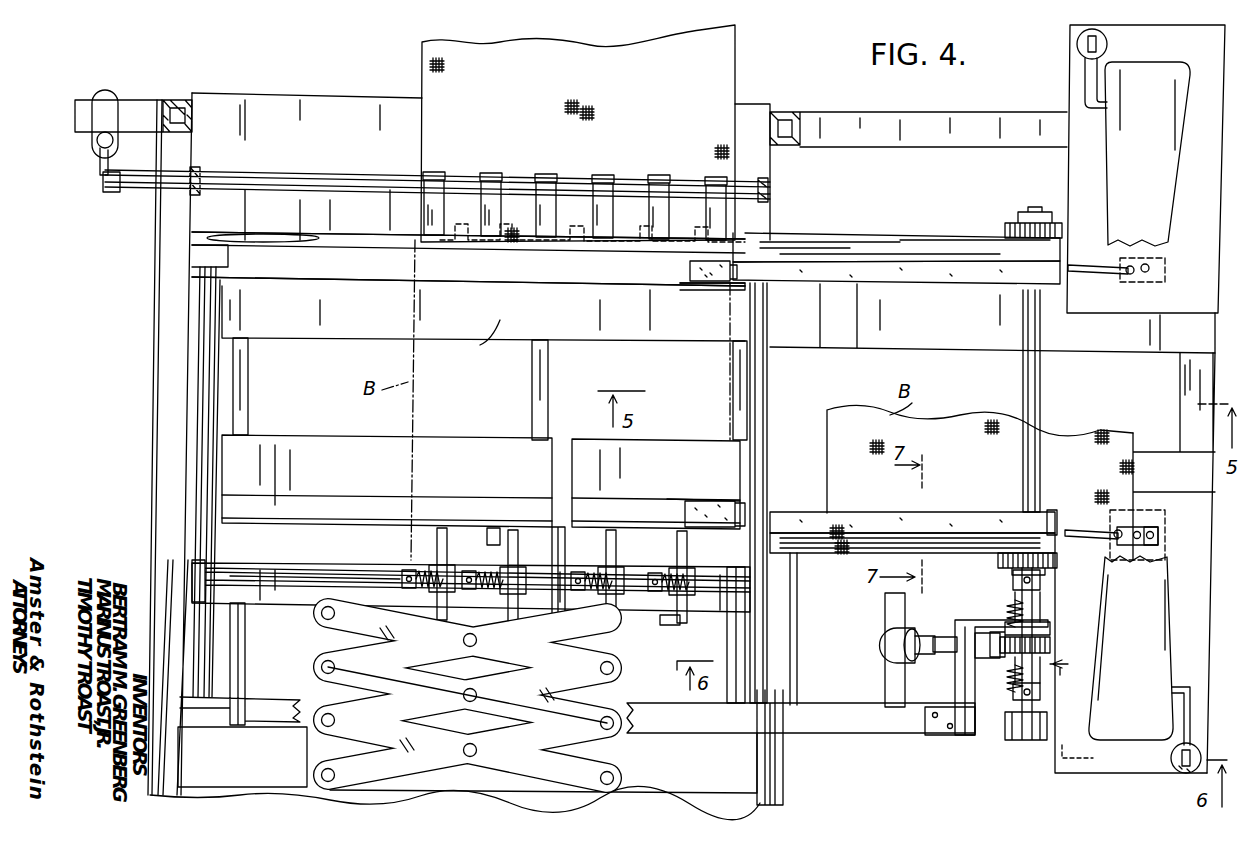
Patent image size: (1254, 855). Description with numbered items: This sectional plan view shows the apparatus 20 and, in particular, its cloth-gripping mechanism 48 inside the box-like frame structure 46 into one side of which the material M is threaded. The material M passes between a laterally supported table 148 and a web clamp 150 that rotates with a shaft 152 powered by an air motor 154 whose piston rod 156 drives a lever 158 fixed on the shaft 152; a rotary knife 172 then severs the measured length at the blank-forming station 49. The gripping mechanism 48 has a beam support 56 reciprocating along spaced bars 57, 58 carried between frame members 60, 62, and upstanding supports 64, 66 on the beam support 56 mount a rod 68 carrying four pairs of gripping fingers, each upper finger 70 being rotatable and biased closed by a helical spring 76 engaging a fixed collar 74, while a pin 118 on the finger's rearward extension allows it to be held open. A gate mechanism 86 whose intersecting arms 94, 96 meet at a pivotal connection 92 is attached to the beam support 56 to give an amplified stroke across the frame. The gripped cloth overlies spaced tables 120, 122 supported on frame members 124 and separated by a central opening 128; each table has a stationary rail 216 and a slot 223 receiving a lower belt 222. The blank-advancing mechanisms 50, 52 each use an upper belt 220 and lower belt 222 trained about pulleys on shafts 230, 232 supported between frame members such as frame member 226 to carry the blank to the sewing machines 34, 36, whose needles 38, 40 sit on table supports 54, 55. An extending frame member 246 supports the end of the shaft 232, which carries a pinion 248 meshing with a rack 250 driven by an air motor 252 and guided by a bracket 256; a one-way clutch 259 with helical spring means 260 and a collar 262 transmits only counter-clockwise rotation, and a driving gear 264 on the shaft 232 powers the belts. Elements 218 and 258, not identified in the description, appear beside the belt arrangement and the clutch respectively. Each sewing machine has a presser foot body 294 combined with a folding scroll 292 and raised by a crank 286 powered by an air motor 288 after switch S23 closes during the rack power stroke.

The apparatus 20 is at (284, 40).
The sewing machine 34 is at (1150, 153).
The sewing machine 36 is at (1135, 698).
The sewing needle 38 is at (1140, 532).
The sewing needle 40 is at (1145, 282).
The frame structure 46 is at (163, 368).
The gripping mechanism 48 is at (424, 551).
The blank-forming station 49 is at (522, 407).
The blank-advancing mechanism 50 is at (842, 580).
The blank-advancing mechanism 52 is at (868, 228).
The table support 54 is at (1070, 82).
The table support 55 is at (1103, 775).
The beam support 56 is at (278, 610).
The bar 57 is at (200, 450).
The bar 58 is at (768, 668).
The frame member 60 is at (270, 727).
The frame member 62 is at (192, 253).
The upstanding support 64 is at (565, 565).
The upstanding support 66 is at (192, 568).
The rod 68 is at (296, 578).
The upper gripping finger 70 is at (496, 528).
The collar 74 is at (470, 571).
The helical spring 76 is at (500, 570).
The gate mechanism 86 is at (310, 774).
The pivotal connection 92 is at (476, 750).
The arm 94 is at (580, 758).
The arm 96 is at (338, 758).
The pin 118 is at (668, 625).
The table 120 is at (292, 445).
The table 122 is at (330, 345).
The frame members 124 is at (248, 395).
The central opening 128 is at (471, 351).
The table 148 is at (352, 100).
The web clamp 150 is at (478, 205).
The shaft 152 is at (140, 190).
The air motor 154 is at (105, 100).
The piston rod 156 is at (98, 152).
The lever 158 is at (103, 180).
The rotary knife 172 is at (247, 234).
The stationary rail 216 is at (515, 288).
The bar 218 is at (936, 228).
The upper belt 220 is at (890, 270).
The lower belt 222 is at (695, 288).
The slot 223 is at (710, 288).
The frame member 226 is at (892, 240).
The shaft 230 is at (768, 382).
The shaft 232 is at (1030, 380).
The frame member 246 is at (816, 740).
The pinion 248 is at (1052, 645).
The rack 250 is at (1005, 632).
The air motor 252 is at (895, 650).
The bracket 256 is at (962, 735).
The collar 258 is at (980, 655).
The one-way rotation clutch unit 259 is at (1070, 664).
The helical spring means 260 is at (1040, 605).
The collar 262 is at (1013, 580).
The driving gear 264 is at (1005, 228).
The crank 286 is at (1097, 96).
The air motor 288 is at (1075, 48).
The folding scroll 292 is at (1121, 530).
The body 294 is at (1090, 266).
The switch S23 is at (952, 637).
The material M is at (506, 50).